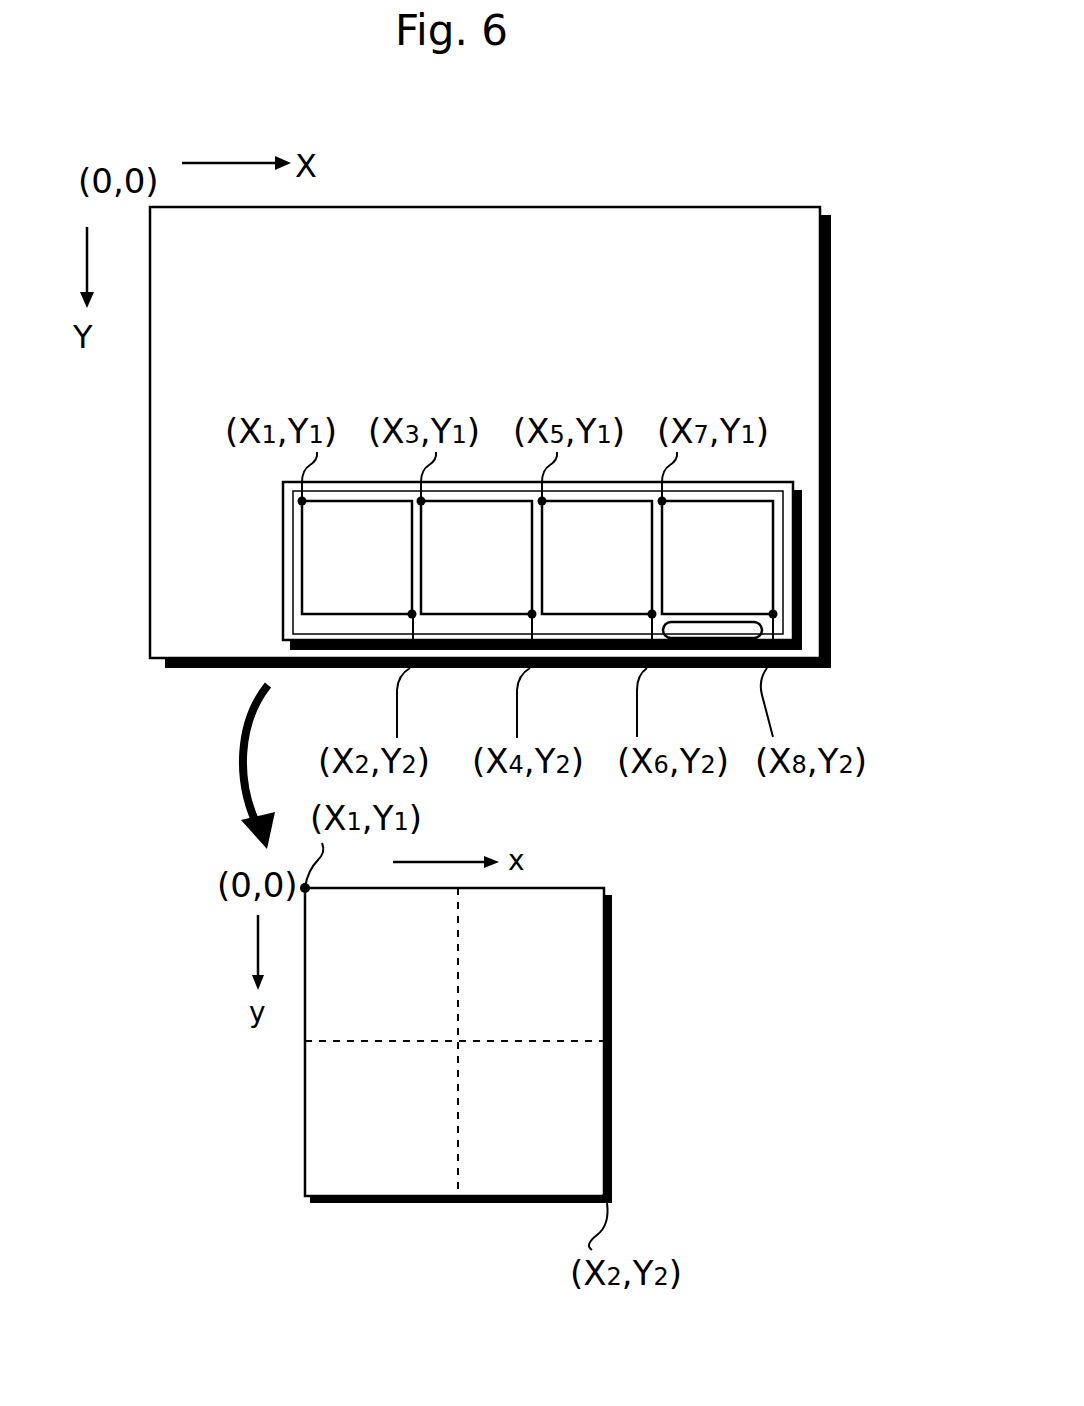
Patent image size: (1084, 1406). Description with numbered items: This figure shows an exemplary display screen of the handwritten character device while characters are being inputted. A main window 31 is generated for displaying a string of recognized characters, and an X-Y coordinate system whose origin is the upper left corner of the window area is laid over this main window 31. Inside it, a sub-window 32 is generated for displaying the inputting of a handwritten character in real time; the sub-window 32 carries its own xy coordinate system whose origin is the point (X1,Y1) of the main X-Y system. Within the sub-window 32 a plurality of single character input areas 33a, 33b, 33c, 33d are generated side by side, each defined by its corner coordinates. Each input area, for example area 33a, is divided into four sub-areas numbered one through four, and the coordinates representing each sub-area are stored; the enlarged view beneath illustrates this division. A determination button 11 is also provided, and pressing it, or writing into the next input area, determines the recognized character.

The main window 31 is at (831, 260).
The sub-window 32 is at (802, 493).
The single character input area 33a is at (345, 614).
The single character input area 33b is at (477, 614).
The single character input area 33c is at (605, 614).
The single character input area 33d is at (773, 550).
The determination button 11 is at (715, 638).